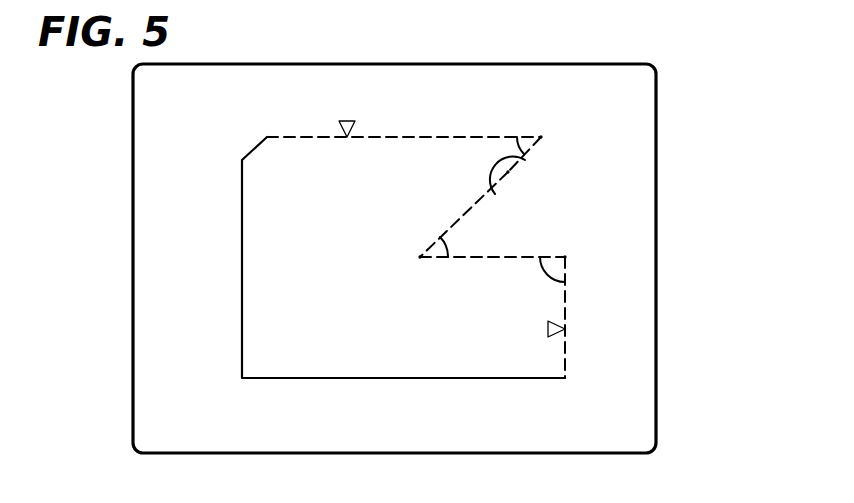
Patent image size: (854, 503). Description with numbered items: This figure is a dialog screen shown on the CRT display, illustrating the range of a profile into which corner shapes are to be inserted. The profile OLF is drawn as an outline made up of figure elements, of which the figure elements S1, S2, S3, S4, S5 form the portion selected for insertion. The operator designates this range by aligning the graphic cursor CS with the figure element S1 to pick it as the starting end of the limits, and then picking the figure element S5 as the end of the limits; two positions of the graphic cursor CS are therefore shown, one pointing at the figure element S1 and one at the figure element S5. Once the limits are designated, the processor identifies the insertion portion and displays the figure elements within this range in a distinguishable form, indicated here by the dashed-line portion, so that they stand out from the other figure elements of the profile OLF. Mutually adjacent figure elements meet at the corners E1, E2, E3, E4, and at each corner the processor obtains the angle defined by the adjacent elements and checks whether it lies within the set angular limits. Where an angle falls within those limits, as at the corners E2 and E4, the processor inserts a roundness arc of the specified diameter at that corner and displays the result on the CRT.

The element CRT is at (656, 355).
The profile OLF is at (228, 253).
The graphic cursor CS is at (347, 120).
The figure element S1 is at (566, 318).
The figure element S2 is at (479, 257).
The figure element S3 is at (457, 224).
The figure element S4 is at (523, 157).
The figure element S5 is at (440, 137).
The corner E1 is at (565, 256).
The corner E2 is at (420, 257).
The corner E3 is at (523, 180).
The corner E4 is at (541, 137).